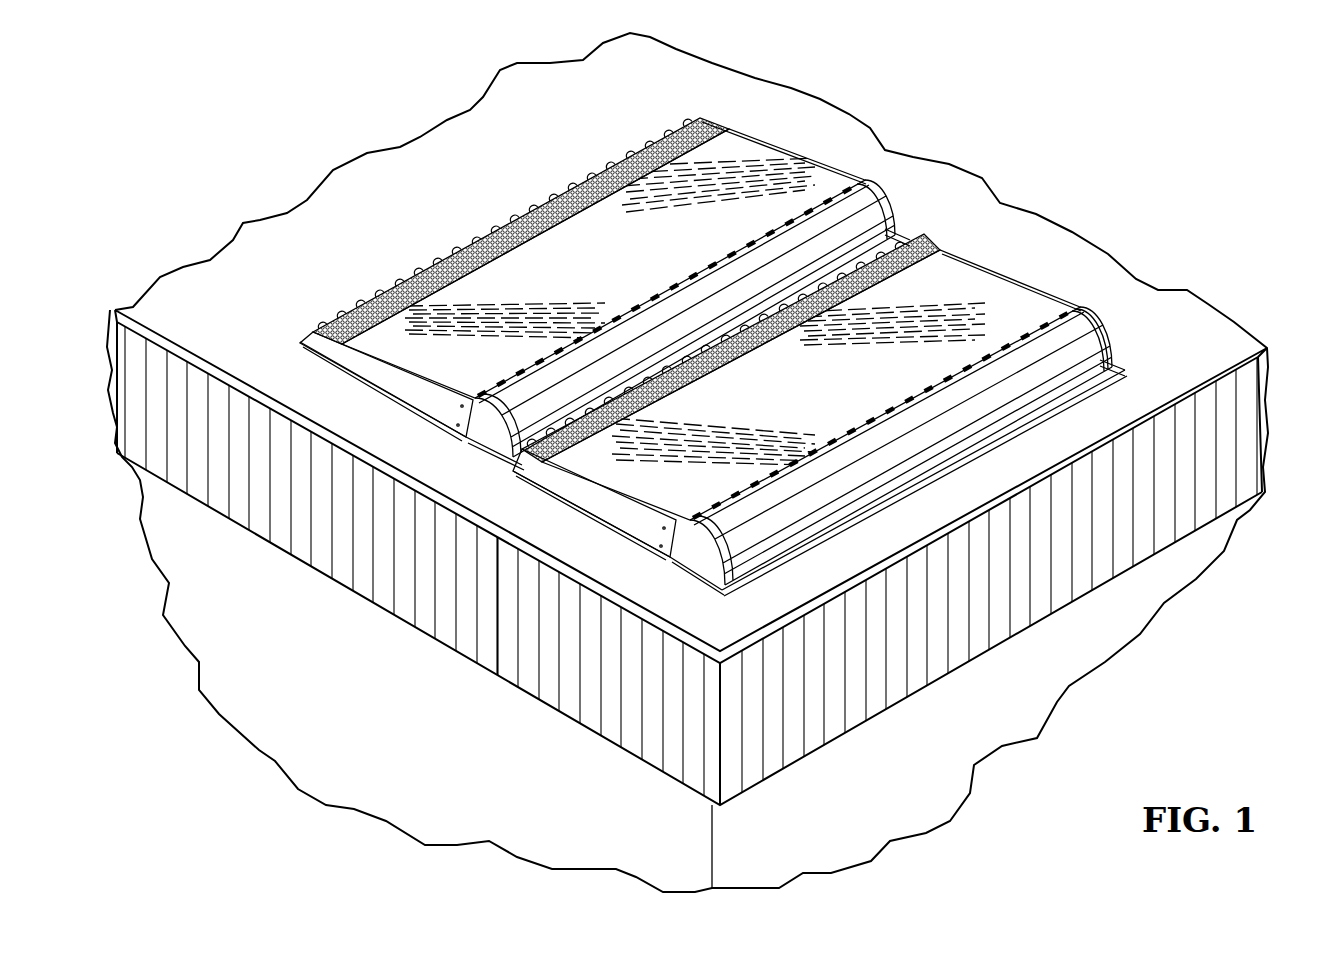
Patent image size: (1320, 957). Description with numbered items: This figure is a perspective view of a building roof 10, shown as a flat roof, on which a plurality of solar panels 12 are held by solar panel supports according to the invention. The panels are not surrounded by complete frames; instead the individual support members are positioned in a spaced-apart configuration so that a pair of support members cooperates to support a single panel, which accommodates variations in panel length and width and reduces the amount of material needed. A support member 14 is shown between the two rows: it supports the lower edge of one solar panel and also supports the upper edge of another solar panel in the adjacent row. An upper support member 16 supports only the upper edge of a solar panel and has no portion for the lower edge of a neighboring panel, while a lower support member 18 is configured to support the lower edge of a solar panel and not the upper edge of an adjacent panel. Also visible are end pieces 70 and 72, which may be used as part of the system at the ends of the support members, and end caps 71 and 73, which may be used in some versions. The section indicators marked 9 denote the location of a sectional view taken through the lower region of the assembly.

The building roof 10 is at (1007, 229).
The solar panels 12 is at (618, 272).
The support member 14 is at (878, 230).
The upper support member 16 is at (1093, 351).
The lower support member 18 is at (701, 121).
The end piece 70 is at (815, 159).
The end cap 71 is at (1082, 316).
The end piece 72 is at (442, 405).
The end cap 73 is at (705, 560).
The section line 9- 9 is at (412, 269).